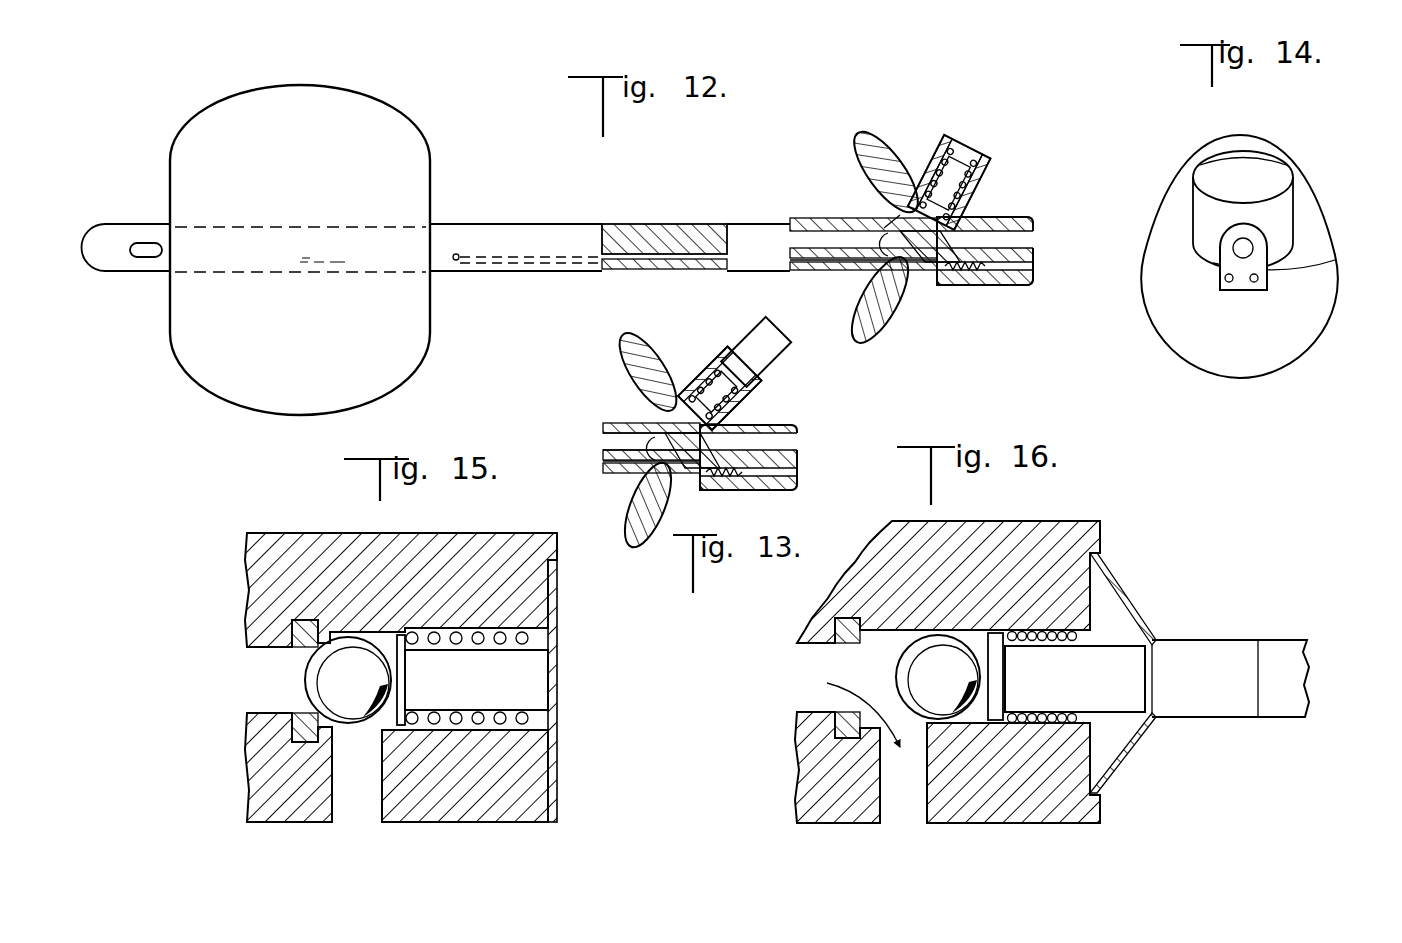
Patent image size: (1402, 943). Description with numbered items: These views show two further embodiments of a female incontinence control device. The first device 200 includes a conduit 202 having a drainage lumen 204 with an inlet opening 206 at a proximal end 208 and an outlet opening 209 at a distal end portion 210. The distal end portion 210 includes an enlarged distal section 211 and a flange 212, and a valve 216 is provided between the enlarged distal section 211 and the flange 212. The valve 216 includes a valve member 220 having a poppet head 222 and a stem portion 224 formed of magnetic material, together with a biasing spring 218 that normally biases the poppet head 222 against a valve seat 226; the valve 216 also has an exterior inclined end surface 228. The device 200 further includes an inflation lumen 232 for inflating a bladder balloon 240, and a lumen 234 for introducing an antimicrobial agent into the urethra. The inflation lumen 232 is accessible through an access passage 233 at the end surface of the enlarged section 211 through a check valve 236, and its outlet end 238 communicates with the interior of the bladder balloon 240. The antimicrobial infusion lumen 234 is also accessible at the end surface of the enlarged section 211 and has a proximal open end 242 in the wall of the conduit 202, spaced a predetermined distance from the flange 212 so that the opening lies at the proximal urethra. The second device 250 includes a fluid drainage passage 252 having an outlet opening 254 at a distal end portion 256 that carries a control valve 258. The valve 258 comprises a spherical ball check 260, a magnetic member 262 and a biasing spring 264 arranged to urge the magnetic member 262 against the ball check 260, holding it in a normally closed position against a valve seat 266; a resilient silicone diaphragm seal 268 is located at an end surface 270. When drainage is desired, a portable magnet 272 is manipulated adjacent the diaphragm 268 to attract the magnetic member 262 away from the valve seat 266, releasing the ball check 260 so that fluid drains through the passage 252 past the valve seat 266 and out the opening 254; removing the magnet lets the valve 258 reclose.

In FIG. 12, the female incontinence control device 200 is at (715, 190).
In FIG. 13, the female incontinence control device 200 is at (592, 370).
In FIG. 14, the female incontinence control device 200 is at (1302, 145).
In FIG. 12, the conduit 202 is at (578, 220).
In FIG. 13, the conduit 202 is at (600, 418).
In FIG. 12, the drainage lumen 204 is at (814, 242).
In FIG. 13, the drainage lumen 204 is at (602, 432).
In FIG. 12, the inlet opening 206 is at (150, 258).
In FIG. 12, the proximal end 208 is at (100, 228).
In FIG. 12, the outlet opening 209 is at (1035, 236).
In FIG. 13, the outlet opening 209 is at (798, 437).
In FIG. 14, the outlet opening 209 is at (1220, 258).
In FIG. 12, the distal end portion 210 is at (1002, 289).
In FIG. 13, the distal end portion 210 is at (762, 494).
In FIG. 12, the enlarged distal section 211 is at (1014, 288).
In FIG. 13, the enlarged distal section 211 is at (788, 492).
In FIG. 14, the enlarged distal section 211 is at (1327, 260).
In FIG. 12, the flange 212 is at (882, 146).
In FIG. 14, the flange 212 is at (1215, 143).
In FIG. 12, the valve 216 is at (977, 154).
In FIG. 13, the valve 216 is at (752, 366).
In FIG. 14, the valve 216 is at (1216, 172).
In FIG. 12, the biasing spring 218 is at (936, 178).
In FIG. 12, the valve member 220 is at (948, 183).
In FIG. 12, the poppet head 222 is at (880, 216).
In FIG. 13, the poppet head 222 is at (716, 391).
In FIG. 12, the stem portion 224 is at (959, 190).
In FIG. 13, the stem portion 224 is at (713, 394).
In FIG. 12, the valve seat 226 is at (880, 226).
In FIG. 13, the valve seat 226 is at (622, 366).
In FIG. 12, the exterior inclined end surface 228 is at (1002, 180).
In FIG. 14, the exterior inclined end surface 228 is at (1280, 170).
In FIG. 12, the inflation lumen 232 is at (860, 267).
In FIG. 13, the inflation lumen 232 is at (607, 460).
In FIG. 12, the access passage 233 is at (1034, 268).
In FIG. 13, the access passage 233 is at (799, 474).
In FIG. 14, the access passage 233 is at (1228, 284).
In FIG. 12, the antimicrobial infusion lumen 234 is at (648, 258).
In FIG. 14, the antimicrobial infusion lumen 234 is at (1258, 283).
In FIG. 12, the check valve 236 is at (956, 287).
In FIG. 13, the check valve 236 is at (729, 482).
In FIG. 12, the outlet end 238 is at (296, 264).
In FIG. 12, the bladder balloon 240 is at (392, 110).
In FIG. 12, the proximal open end 242 is at (457, 261).
In FIG. 15, the female incontinence control device 250 is at (573, 489).
In FIG. 16, the female incontinence control device 250 is at (1103, 493).
In FIG. 15, the fluid drainage passage 252 is at (265, 692).
In FIG. 16, the fluid drainage passage 252 is at (807, 695).
In FIG. 15, the outlet opening 254 is at (355, 813).
In FIG. 16, the outlet opening 254 is at (905, 802).
In FIG. 15, the distal end portion 256 is at (489, 826).
In FIG. 16, the distal end portion 256 is at (1027, 830).
In FIG. 15, the control valve 258 is at (413, 624).
In FIG. 16, the control valve 258 is at (987, 627).
In FIG. 15, the spherical ball check 260 is at (350, 652).
In FIG. 16, the spherical ball check 260 is at (938, 645).
In FIG. 15, the magnetic member 262 is at (476, 680).
In FIG. 16, the magnetic member 262 is at (1075, 679).
In FIG. 15, the biasing spring 264 is at (527, 633).
In FIG. 16, the biasing spring 264 is at (1092, 603).
In FIG. 15, the valve seat 266 is at (300, 647).
In FIG. 16, the valve seat 266 is at (858, 645).
In FIG. 15, the resilient diaphragm seal 268 is at (558, 721).
In FIG. 16, the resilient diaphragm seal 268 is at (1133, 607).
In FIG. 16, the end surface 270 is at (1102, 530).
In FIG. 16, the portable magnet 272 is at (1243, 638).